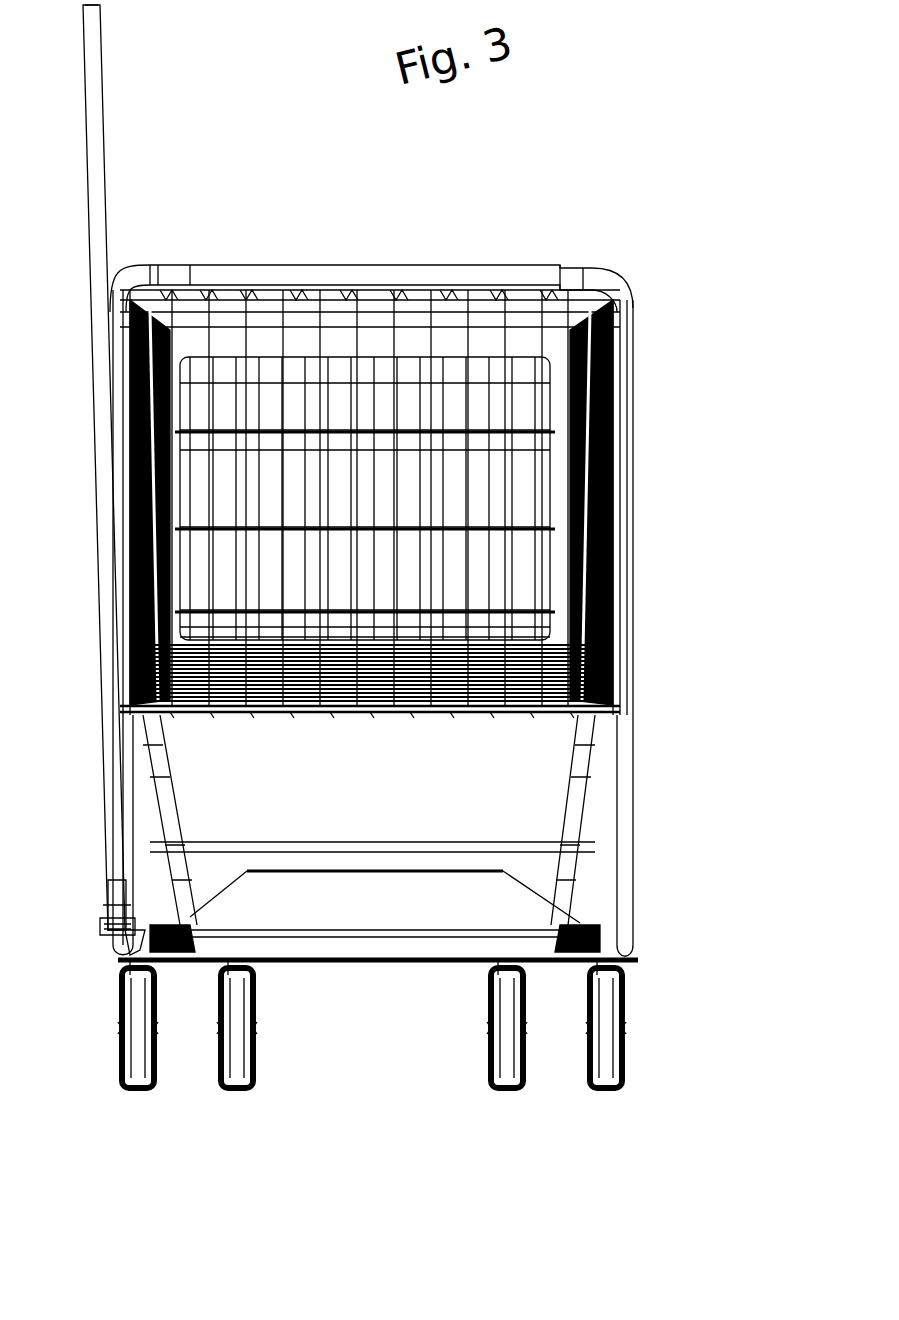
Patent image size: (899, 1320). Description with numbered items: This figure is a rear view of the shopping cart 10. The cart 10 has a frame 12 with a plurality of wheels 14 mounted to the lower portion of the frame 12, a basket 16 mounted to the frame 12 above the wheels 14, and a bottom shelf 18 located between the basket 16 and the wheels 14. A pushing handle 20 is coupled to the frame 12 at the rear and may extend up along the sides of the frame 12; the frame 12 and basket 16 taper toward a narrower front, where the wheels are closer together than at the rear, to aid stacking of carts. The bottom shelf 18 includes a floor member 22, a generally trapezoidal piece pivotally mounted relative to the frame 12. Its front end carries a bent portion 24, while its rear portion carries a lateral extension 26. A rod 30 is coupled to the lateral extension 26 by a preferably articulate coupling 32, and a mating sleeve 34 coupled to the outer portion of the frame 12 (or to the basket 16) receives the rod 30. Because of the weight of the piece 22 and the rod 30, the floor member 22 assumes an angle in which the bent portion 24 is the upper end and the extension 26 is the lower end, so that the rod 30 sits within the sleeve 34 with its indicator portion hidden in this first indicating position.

The shopping cart 10 is at (655, 188).
The frame 12 is at (617, 785).
The wheels 14 is at (142, 1090).
The basket 16 is at (632, 455).
The bottom shelf 18 is at (690, 888).
The pushing handle 20 is at (458, 288).
The floor member 22 is at (400, 915).
The bent portion 24 is at (432, 870).
The lateral extension 26 is at (118, 932).
The rod 30 is at (108, 892).
The coupling 32 is at (105, 926).
The mating sleeve 34 is at (97, 505).